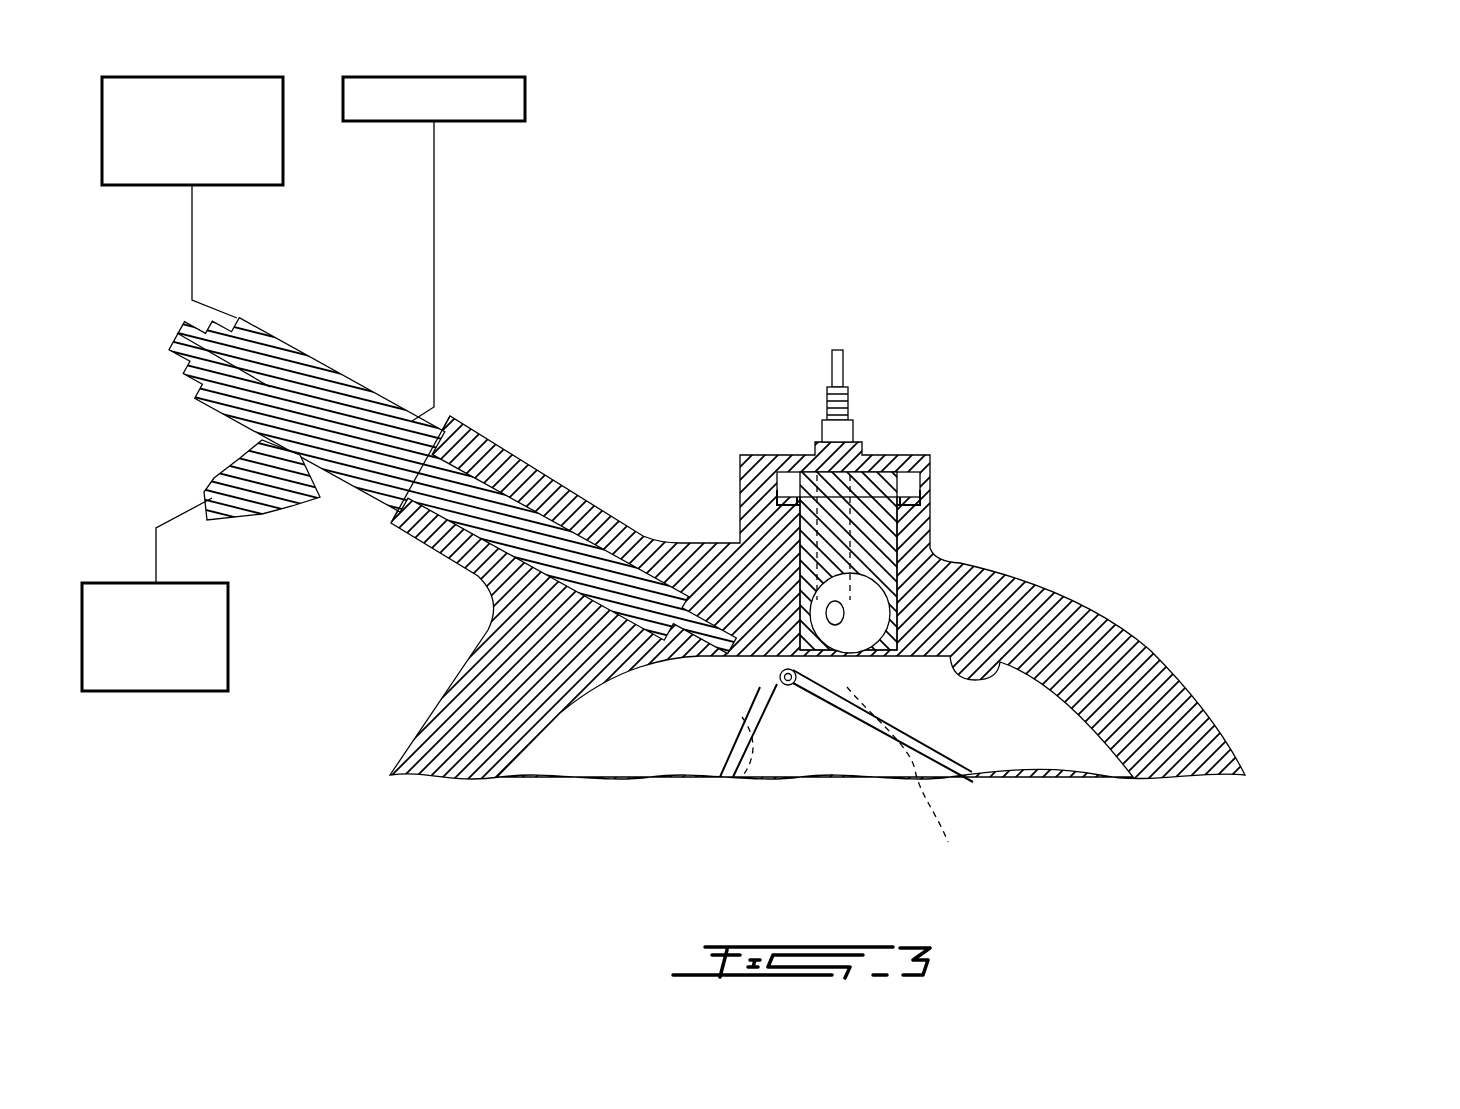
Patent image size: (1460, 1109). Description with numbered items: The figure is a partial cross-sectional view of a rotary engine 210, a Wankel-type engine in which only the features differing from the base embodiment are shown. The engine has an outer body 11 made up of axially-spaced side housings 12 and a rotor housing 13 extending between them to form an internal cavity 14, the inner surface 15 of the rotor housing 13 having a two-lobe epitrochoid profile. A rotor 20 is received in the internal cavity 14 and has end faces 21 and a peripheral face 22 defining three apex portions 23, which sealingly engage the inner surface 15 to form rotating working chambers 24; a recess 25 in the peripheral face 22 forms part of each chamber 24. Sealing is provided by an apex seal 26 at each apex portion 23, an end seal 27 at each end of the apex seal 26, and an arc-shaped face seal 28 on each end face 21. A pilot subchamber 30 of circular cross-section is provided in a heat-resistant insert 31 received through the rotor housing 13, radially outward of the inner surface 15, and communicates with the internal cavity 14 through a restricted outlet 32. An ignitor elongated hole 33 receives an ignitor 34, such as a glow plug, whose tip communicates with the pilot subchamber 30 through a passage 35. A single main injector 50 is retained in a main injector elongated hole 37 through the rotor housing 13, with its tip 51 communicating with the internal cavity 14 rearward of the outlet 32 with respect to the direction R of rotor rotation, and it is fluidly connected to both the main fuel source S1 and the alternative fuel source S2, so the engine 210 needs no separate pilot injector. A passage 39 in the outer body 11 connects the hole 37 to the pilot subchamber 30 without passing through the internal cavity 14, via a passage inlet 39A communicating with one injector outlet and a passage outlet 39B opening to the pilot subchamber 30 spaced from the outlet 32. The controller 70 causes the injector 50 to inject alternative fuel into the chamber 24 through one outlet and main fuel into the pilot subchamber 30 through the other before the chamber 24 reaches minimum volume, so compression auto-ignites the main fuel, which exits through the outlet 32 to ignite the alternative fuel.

The outer body 11 is at (1132, 620).
The side housings 12 is at (1063, 723).
The rotor housing 13 is at (1177, 742).
The internal cavity 14 is at (1028, 747).
The inner surface 15 is at (1003, 665).
The rotor 20 is at (810, 756).
The end faces 21 is at (850, 748).
The peripheral face 22 is at (745, 727).
The apex portions 23 is at (727, 632).
The working chambers 24 is at (640, 721).
The recess 25 is at (904, 777).
The apex seal 26 is at (763, 636).
The end seal 27 is at (790, 688).
The face seal 28 is at (742, 768).
The pilot subchamber 30 is at (866, 600).
The insert 31 is at (878, 478).
The outlet 32 is at (850, 648).
The ignitor elongated hole 33 is at (817, 470).
The ignitor 34 is at (836, 347).
The passage 35 is at (835, 602).
The main injector elongated hole 37 is at (488, 482).
The passage 39 is at (782, 648).
The passage inlet 39A is at (740, 668).
The passage outlet 39B is at (838, 684).
The main injector 50 is at (270, 326).
The tip 51 is at (718, 665).
The controller 70 is at (525, 100).
The rotary engine 210 is at (1317, 458).
The main fuel source S1 is at (228, 637).
The alternative fuel source S2 is at (283, 163).
The direction of rotor rotation R is at (850, 728).